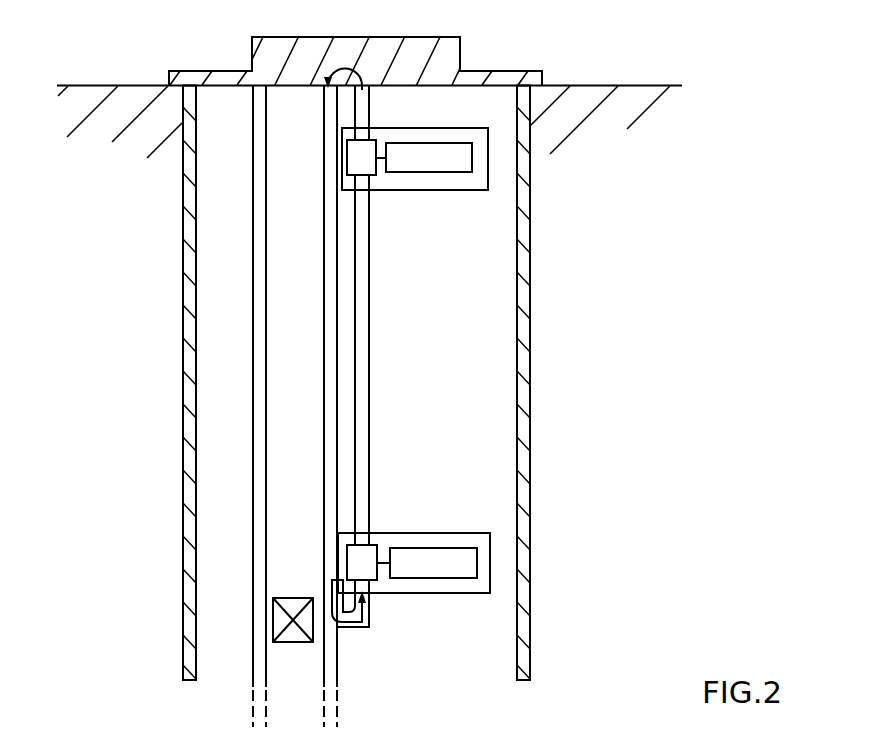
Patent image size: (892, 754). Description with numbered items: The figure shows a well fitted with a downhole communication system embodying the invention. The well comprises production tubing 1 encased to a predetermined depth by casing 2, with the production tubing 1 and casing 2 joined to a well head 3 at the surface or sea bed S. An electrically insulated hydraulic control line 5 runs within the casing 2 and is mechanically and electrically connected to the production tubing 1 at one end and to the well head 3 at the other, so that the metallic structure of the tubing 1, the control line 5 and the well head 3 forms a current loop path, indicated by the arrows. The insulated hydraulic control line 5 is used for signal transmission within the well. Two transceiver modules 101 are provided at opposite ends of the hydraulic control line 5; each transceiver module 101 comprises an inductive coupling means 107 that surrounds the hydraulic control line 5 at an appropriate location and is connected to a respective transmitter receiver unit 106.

The production tubing 1 is at (330, 377).
The casing 2 is at (525, 398).
The well head 3 is at (447, 55).
The hydraulic control line 5 is at (365, 470).
The surface S is at (643, 85).
The transceiver module 101 is at (485, 147).
The transmitter receiver unit 106 is at (447, 170).
The inductive coupling means 107 is at (368, 163).